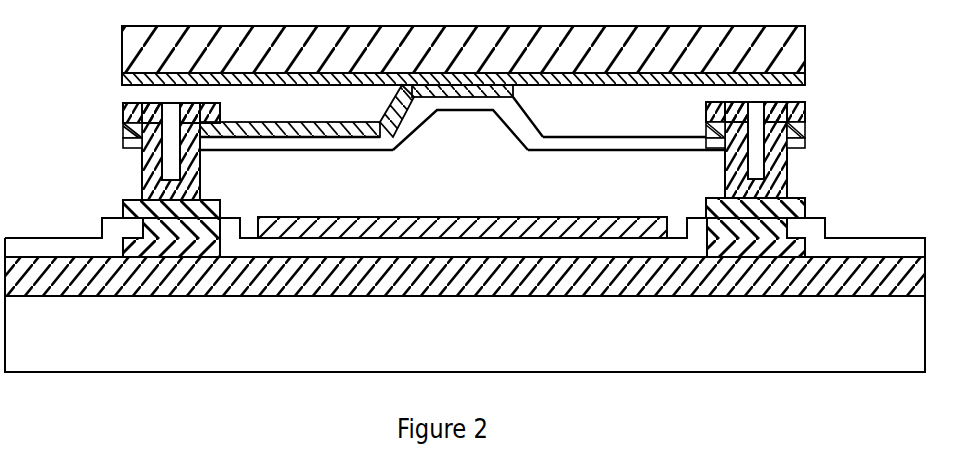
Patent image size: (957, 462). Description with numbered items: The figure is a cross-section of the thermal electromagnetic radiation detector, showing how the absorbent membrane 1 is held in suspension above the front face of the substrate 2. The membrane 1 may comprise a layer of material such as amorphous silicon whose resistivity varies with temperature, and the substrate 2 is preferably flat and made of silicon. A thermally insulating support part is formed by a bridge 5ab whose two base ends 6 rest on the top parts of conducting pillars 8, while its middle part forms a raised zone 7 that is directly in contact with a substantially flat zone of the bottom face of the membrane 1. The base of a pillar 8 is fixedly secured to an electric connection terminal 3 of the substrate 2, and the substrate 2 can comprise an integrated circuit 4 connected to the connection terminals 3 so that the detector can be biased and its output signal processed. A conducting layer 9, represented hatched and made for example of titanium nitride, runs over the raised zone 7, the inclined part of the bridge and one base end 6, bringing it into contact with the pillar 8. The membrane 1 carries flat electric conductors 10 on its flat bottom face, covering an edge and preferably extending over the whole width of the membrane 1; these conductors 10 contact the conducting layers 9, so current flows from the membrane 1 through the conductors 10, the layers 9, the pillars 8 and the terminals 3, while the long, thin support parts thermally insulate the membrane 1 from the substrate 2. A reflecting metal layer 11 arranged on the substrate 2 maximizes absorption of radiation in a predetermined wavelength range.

The absorbent membrane 1 is at (90, 47).
The substrate 2 is at (533, 367).
The electric connection terminals 3 is at (128, 230).
The integrated circuit 4 is at (622, 288).
The bridge 5ab is at (406, 170).
The base ends 6 is at (297, 139).
The raised zone 7 is at (531, 92).
The conducting pillar 8 is at (142, 188).
The conducting layer 9 is at (240, 124).
The flat electric conductors 10 is at (802, 87).
The reflecting metal layer 11 is at (497, 218).